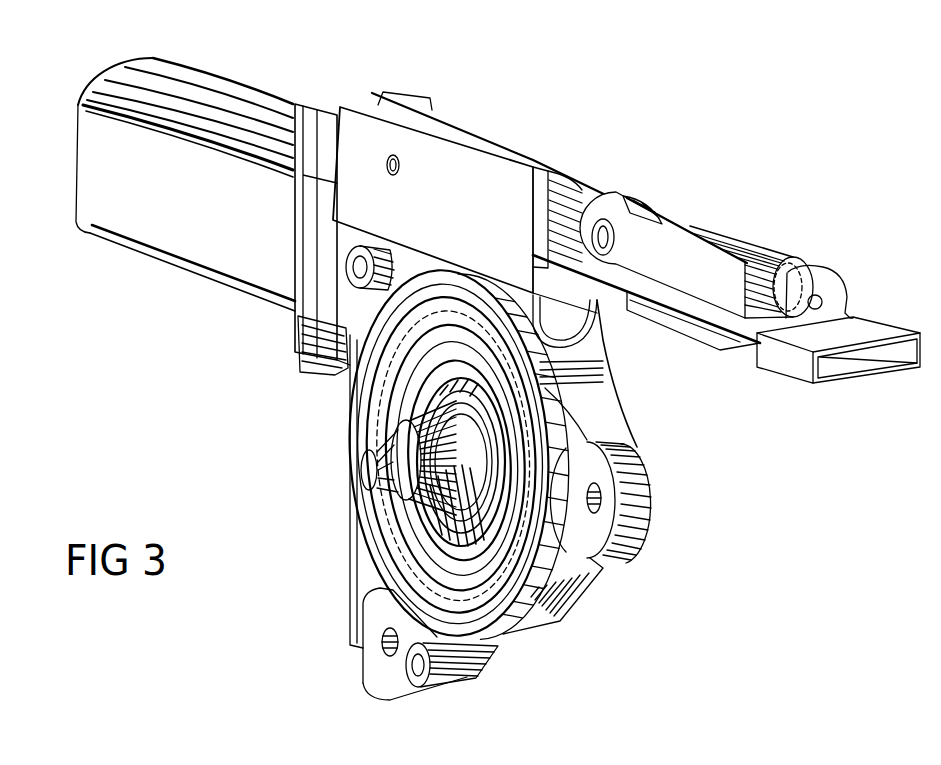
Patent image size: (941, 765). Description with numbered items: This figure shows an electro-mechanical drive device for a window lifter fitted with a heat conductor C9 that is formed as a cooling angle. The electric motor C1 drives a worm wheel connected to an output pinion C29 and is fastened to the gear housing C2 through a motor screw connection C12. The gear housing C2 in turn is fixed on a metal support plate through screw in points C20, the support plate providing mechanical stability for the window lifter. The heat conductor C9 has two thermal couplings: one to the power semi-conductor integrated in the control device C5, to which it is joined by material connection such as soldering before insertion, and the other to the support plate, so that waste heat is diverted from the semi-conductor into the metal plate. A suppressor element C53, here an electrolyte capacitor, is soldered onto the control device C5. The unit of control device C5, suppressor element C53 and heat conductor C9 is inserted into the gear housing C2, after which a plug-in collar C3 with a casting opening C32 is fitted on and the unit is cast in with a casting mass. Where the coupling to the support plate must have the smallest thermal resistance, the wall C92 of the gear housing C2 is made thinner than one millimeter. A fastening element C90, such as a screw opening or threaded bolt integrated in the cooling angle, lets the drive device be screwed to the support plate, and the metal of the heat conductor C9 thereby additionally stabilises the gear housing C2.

The electric motor C1 is at (148, 222).
The gear housing C2 is at (577, 590).
The plug-in collar C3 is at (873, 337).
The control device C5 is at (668, 330).
The heat conductor C9 is at (675, 270).
The motor screw connection C12 is at (287, 343).
The screw in points C20 is at (382, 650).
The output pinion C29 is at (352, 496).
The casting opening C32 is at (843, 297).
The suppressor element C53 is at (752, 250).
The fastening element C90 is at (606, 222).
The wall C92 is at (470, 193).